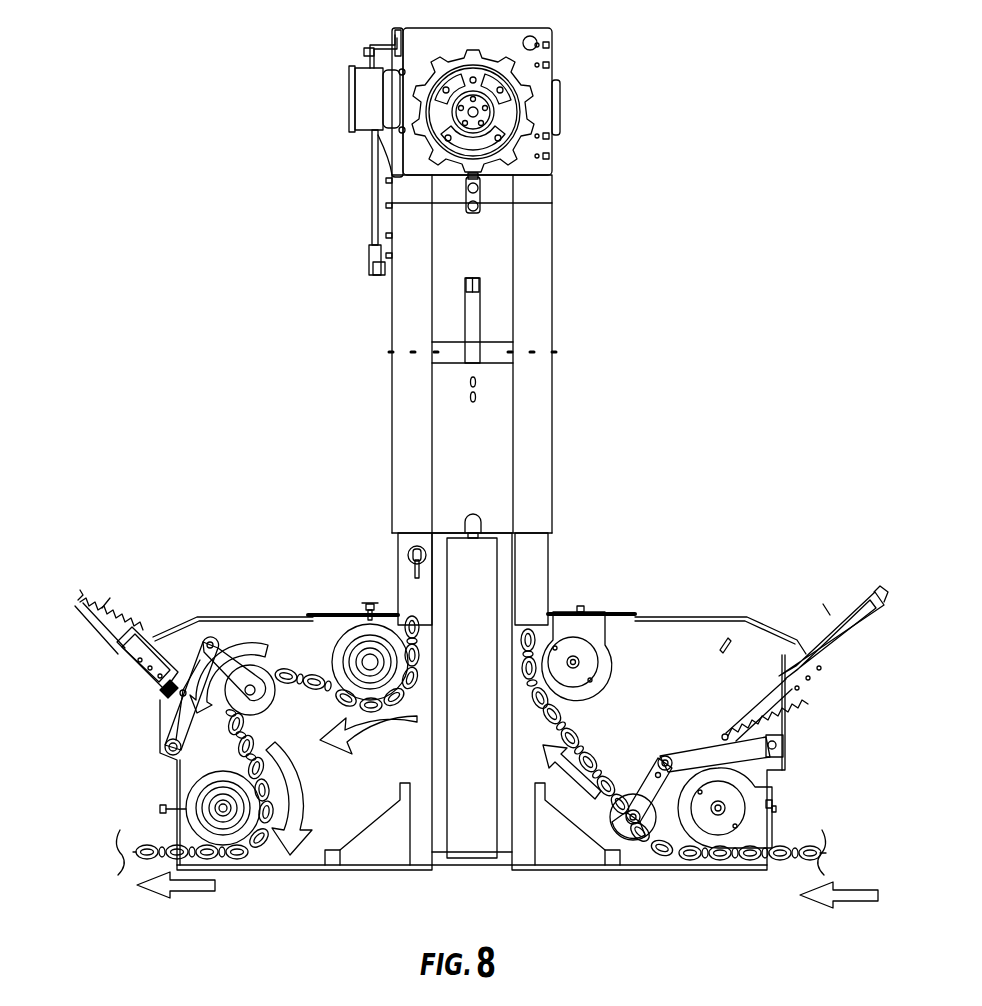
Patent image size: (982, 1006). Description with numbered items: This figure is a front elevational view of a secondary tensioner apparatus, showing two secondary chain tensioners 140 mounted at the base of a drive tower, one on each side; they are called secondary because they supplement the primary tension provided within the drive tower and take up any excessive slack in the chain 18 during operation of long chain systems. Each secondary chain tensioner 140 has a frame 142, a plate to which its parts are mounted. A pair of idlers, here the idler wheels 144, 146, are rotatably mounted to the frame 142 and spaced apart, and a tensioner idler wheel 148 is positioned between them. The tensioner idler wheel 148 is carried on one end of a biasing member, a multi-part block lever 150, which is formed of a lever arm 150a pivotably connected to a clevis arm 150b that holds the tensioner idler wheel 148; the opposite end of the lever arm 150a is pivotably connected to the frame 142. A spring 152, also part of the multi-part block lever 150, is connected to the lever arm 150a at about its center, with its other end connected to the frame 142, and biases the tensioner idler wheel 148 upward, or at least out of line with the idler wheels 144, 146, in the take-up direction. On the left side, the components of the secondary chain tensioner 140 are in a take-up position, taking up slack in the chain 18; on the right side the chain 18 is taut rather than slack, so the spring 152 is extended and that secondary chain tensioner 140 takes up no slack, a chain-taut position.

The chain 18 is at (143, 860).
The secondary chain tensioner 140 is at (165, 640).
The frame 142 is at (160, 715).
The idler wheel 144 is at (224, 846).
The idler wheel 146 is at (362, 650).
The tensioner idler wheel 148 is at (265, 664).
The multi-part block lever 150 is at (169, 656).
The lever arm 150a is at (175, 725).
The clevis arm 150b is at (240, 660).
The spring 152 is at (158, 700).